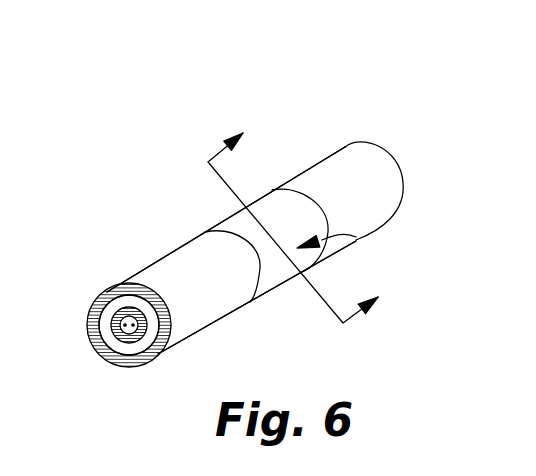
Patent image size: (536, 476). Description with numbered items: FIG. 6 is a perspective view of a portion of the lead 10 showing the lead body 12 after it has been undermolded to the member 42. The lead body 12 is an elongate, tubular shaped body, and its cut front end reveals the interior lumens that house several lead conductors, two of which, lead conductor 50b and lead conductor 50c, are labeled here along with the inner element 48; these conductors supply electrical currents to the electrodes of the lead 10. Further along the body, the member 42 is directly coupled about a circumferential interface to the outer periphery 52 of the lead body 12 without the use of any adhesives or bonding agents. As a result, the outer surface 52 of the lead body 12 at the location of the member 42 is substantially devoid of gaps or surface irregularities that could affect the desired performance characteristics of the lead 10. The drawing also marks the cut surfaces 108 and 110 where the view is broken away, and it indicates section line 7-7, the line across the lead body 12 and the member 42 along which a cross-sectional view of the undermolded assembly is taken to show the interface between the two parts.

The lead 10 is at (193, 66).
The lead body 12 is at (150, 264).
The section line 7- 7 is at (299, 221).
The inner cut surface 110 is at (310, 197).
The outer periphery 52 is at (387, 172).
The member 42 is at (356, 237).
The cut face of body 108 is at (258, 292).
The lead conductor 50b is at (118, 313).
The outer layer 48 is at (122, 356).
The lead conductor 50c is at (123, 348).